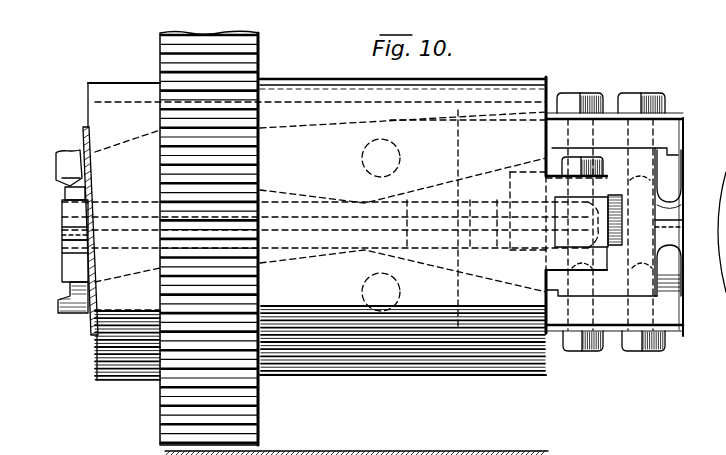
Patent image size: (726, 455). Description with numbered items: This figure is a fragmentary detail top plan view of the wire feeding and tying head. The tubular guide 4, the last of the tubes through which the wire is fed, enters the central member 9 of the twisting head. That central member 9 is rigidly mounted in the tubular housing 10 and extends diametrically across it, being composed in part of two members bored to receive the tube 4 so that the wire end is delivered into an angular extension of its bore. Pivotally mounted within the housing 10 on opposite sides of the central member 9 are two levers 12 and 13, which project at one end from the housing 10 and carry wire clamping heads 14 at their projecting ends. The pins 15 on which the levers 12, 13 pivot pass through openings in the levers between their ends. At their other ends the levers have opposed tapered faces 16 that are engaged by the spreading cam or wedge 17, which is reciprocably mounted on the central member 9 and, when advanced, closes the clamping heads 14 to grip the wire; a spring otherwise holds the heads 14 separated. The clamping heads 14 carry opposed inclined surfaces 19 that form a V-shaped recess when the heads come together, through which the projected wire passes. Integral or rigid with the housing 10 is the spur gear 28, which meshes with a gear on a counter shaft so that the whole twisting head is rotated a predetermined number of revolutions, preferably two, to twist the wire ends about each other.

The tubular guide 4 is at (295, 217).
The central member 9 is at (72, 243).
The tubular housing 10 is at (533, 103).
The lever 12 is at (480, 174).
The lever 13 is at (449, 268).
The wire clamping head 14 is at (669, 223).
The pin 15 is at (402, 152).
The tapered face 16 is at (62, 173).
The spreading cam or wedge 17 is at (88, 171).
The inclined surface 19 is at (668, 230).
The spur gear 28 is at (237, 79).